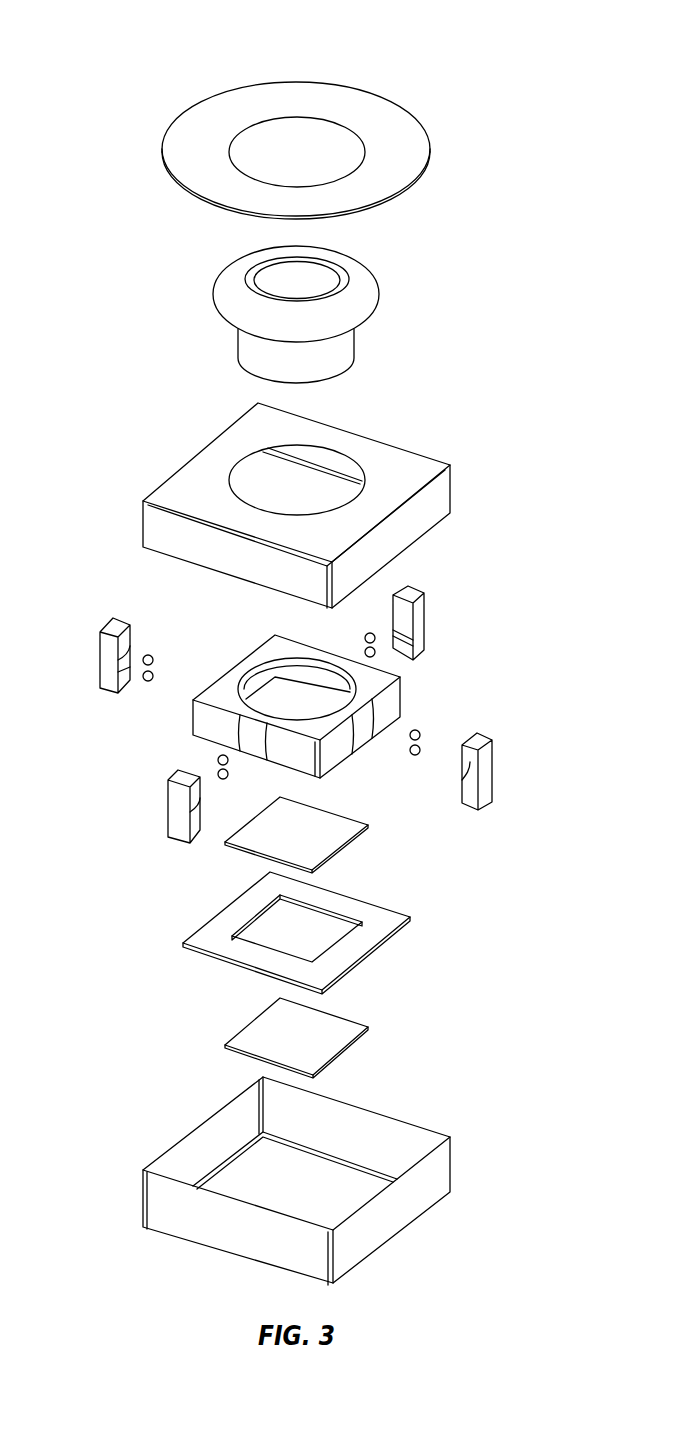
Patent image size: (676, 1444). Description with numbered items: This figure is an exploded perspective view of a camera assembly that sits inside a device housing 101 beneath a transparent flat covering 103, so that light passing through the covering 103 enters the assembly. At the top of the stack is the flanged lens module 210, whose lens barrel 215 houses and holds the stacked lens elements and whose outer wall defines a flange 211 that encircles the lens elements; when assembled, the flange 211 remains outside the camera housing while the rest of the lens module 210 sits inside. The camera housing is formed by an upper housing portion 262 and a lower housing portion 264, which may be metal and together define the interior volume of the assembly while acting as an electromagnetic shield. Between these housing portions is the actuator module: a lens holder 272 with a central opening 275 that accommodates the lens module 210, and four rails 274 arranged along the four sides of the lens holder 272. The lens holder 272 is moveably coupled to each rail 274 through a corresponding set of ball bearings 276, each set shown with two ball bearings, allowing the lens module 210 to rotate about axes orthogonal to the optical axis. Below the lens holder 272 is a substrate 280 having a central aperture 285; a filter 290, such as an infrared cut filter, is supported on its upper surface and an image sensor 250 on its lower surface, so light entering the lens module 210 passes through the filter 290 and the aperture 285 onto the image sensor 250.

The device housing 101 is at (424, 128).
The transparent flat covering 103 is at (245, 128).
The flanged lens module 210 is at (197, 268).
The flange 211 is at (379, 292).
The lens barrel 215 is at (355, 339).
The upper housing portion 262 is at (452, 482).
The lens holder 272 is at (246, 657).
The central opening 275 is at (311, 702).
The rails 274 is at (99, 655).
The ball bearings 276 is at (151, 656).
The filter 290 is at (370, 826).
The substrate 280 is at (329, 931).
The central aperture 285 is at (321, 926).
The image sensor 250 is at (370, 1027).
The lower housing portion 264 is at (452, 1159).